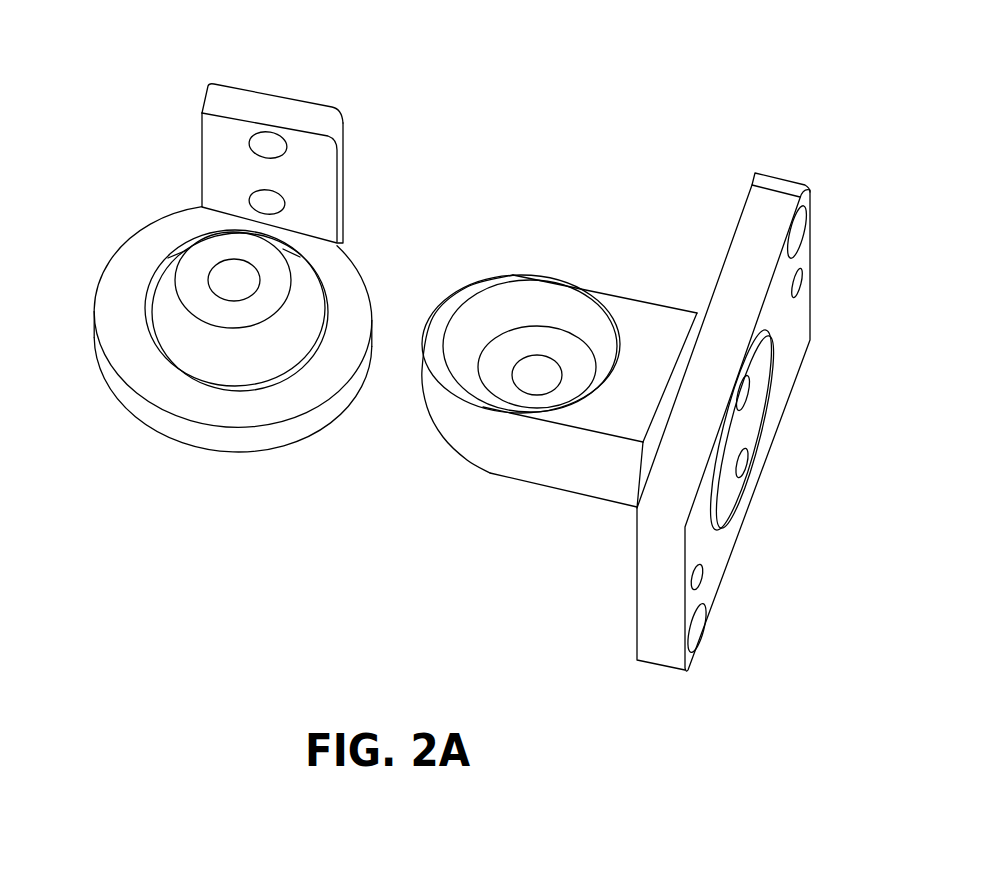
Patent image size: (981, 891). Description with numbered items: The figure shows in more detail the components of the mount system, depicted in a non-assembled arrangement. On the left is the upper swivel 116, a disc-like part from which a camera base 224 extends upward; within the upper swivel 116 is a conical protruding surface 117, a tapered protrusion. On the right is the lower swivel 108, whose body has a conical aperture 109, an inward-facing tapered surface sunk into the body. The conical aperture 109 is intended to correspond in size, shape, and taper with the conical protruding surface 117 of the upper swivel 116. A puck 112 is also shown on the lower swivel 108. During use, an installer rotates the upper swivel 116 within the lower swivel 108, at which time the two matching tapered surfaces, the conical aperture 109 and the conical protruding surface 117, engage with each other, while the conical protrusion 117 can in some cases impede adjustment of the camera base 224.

The upper swivel 116 is at (135, 222).
The conical tapered protrusion 117 is at (230, 353).
The camera base 224 is at (230, 152).
The lower swivel 108 is at (497, 488).
The conical aperture 109 is at (567, 313).
The puck 112 is at (752, 392).